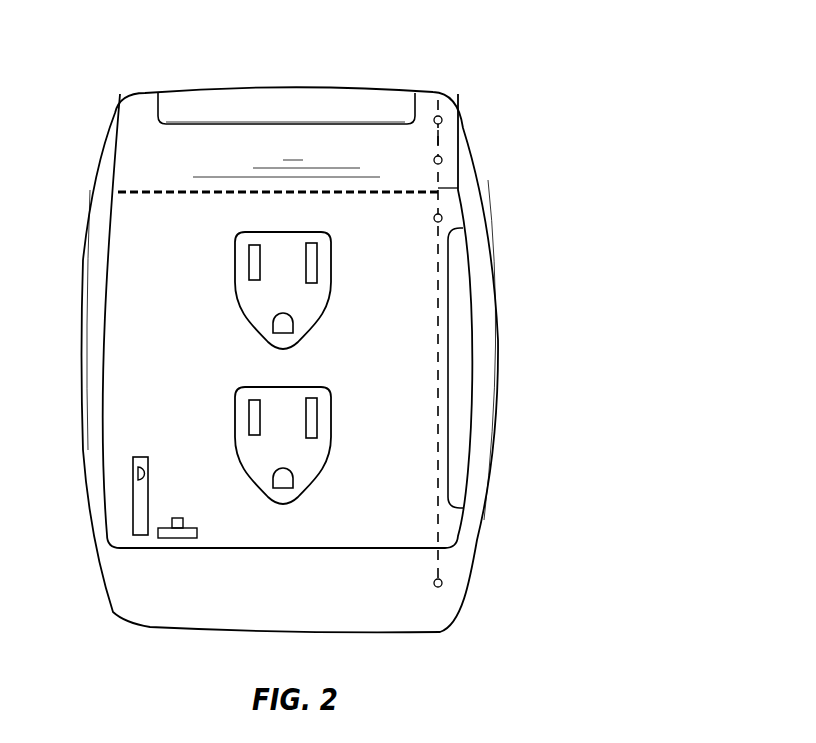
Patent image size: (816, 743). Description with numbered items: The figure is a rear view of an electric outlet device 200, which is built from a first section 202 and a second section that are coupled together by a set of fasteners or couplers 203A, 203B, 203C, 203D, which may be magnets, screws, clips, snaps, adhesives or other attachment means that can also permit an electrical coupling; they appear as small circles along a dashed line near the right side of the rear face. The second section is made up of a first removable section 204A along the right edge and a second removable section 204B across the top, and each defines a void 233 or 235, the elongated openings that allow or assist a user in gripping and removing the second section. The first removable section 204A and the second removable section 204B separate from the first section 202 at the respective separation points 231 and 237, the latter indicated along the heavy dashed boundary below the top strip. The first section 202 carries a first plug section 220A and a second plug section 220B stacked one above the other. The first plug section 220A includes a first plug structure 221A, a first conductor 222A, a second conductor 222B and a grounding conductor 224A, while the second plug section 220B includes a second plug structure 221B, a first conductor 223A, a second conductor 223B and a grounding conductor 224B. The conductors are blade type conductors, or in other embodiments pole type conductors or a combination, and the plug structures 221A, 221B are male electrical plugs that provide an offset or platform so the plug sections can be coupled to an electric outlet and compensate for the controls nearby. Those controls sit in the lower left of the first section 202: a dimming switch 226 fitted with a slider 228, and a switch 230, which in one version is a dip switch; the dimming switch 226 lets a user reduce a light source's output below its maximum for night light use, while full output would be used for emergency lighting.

The electric outlet device 200 is at (143, 42).
The first section 202 is at (252, 205).
The fastener 203A is at (441, 117).
The fastener 203B is at (442, 160).
The fastener 203C is at (442, 219).
The fastener 203D is at (443, 583).
The first removable section 204A is at (453, 206).
The second removable section 204B is at (310, 142).
The first plug section 220A is at (272, 274).
The second plug section 220B is at (272, 427).
The first plug structure 221A is at (293, 231).
The second plug structure 221B is at (293, 386).
The first conductor 222A is at (250, 262).
The second conductor 222B is at (318, 270).
The first conductor 223A is at (250, 417).
The second conductor 223B is at (318, 424).
The grounding conductor 224A is at (292, 326).
The grounding conductor 224B is at (292, 481).
The dimming switch 226 is at (141, 538).
The slider 228 is at (144, 472).
The switch 230 is at (180, 540).
The separation point 231 is at (442, 137).
The void 233 is at (458, 348).
The void 235 is at (237, 103).
The separation point 237 is at (424, 186).